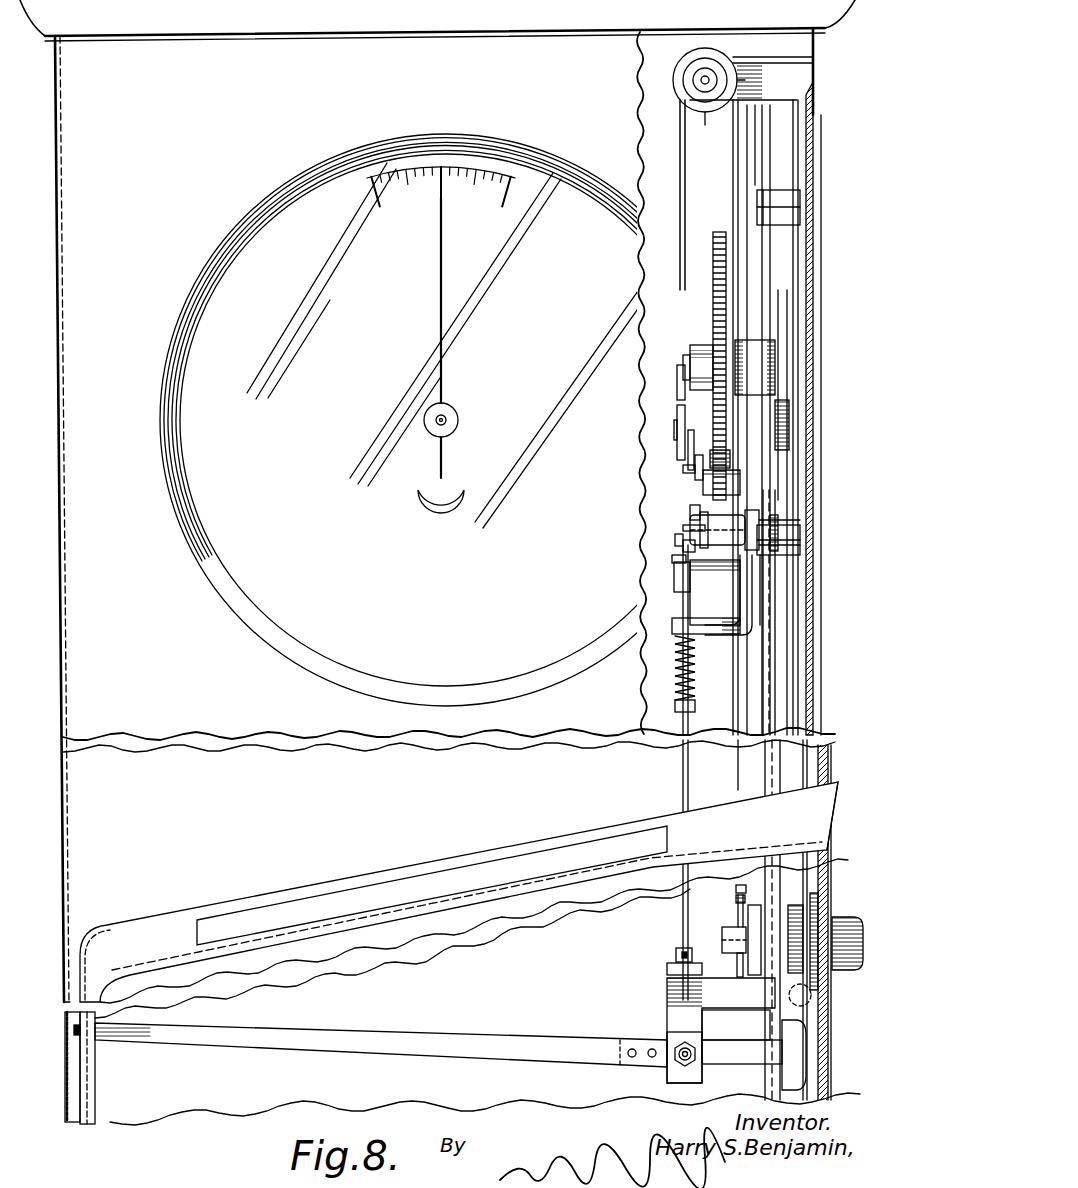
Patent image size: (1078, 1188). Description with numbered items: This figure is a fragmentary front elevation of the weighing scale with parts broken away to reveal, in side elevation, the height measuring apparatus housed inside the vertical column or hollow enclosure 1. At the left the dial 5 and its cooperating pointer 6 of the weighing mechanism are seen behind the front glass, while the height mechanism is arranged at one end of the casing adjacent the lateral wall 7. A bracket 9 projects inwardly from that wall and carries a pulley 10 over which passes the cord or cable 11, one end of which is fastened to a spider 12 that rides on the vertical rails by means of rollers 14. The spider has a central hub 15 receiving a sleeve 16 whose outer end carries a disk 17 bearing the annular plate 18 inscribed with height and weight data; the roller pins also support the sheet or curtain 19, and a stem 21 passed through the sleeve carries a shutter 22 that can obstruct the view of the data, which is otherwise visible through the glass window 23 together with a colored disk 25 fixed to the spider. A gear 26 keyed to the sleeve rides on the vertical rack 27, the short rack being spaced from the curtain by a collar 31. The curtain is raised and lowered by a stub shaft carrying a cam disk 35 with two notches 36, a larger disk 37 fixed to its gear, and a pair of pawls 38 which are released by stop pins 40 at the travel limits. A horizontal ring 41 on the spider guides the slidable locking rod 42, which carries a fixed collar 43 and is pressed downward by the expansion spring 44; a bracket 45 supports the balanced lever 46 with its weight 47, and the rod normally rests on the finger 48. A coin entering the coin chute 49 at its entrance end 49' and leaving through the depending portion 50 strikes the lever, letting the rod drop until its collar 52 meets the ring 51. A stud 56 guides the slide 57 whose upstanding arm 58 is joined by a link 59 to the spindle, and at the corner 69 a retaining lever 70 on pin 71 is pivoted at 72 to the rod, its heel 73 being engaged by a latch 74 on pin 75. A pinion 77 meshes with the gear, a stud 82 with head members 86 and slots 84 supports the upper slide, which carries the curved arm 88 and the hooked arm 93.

The vertical column or hollow enclosure 1 is at (58, 338).
The dial 5 is at (460, 195).
The pointer 6 is at (437, 296).
The lateral wall 7 is at (814, 46).
The bracket 9 is at (755, 68).
The pulley 10 is at (692, 62).
The cord or cable 11 is at (725, 150).
The spider 12 is at (745, 273).
The rollers 14 is at (782, 203).
The central hub 15 is at (760, 353).
The sleeve 16 is at (705, 342).
The disk 17 is at (786, 411).
The annular plate 18 is at (790, 476).
The sheet or curtain 19 is at (800, 296).
The stem 21 is at (694, 355).
The shutter 22 is at (790, 326).
The glass window 23 is at (818, 246).
The colored disk 25 is at (752, 121).
The gear 26 is at (716, 274).
The vertical rack 27 is at (768, 686).
The collar 31 is at (757, 585).
The disk 35 is at (724, 940).
The notches 36 is at (736, 920).
The larger disk 37 is at (752, 940).
The pawls 38 is at (736, 890).
The stop pins 40 is at (680, 608).
The horizontal ring 41 is at (672, 622).
The slidable locking rod 42 is at (682, 770).
The fixed collar 43 is at (675, 708).
The expansion spring 44 is at (672, 674).
The bracket 45 is at (667, 994).
The balanced lever 46 is at (431, 1034).
The weight 47 is at (792, 1058).
The finger 48 is at (667, 1026).
The coin chute 49 is at (459, 892).
The entrance end 49' is at (842, 816).
The depending portion 50 is at (95, 1082).
The ring 51 is at (667, 970).
The collar 52 is at (678, 955).
The stud 56 is at (730, 545).
The slide 57 is at (708, 548).
The upstanding arm 58 is at (679, 440).
The link 59 is at (679, 385).
The corner 69 is at (755, 600).
The retaining lever 70 is at (683, 554).
The pin 71 is at (710, 580).
The pivot 72 is at (676, 579).
The heel 73 is at (676, 560).
The latch 74 is at (683, 527).
The pin 75 is at (676, 541).
The pinion 77 is at (750, 460).
The stud 82 is at (742, 490).
The slot 84 is at (690, 506).
The head members 86 is at (716, 462).
The curved arm 88 is at (715, 450).
The arm 93 is at (688, 471).